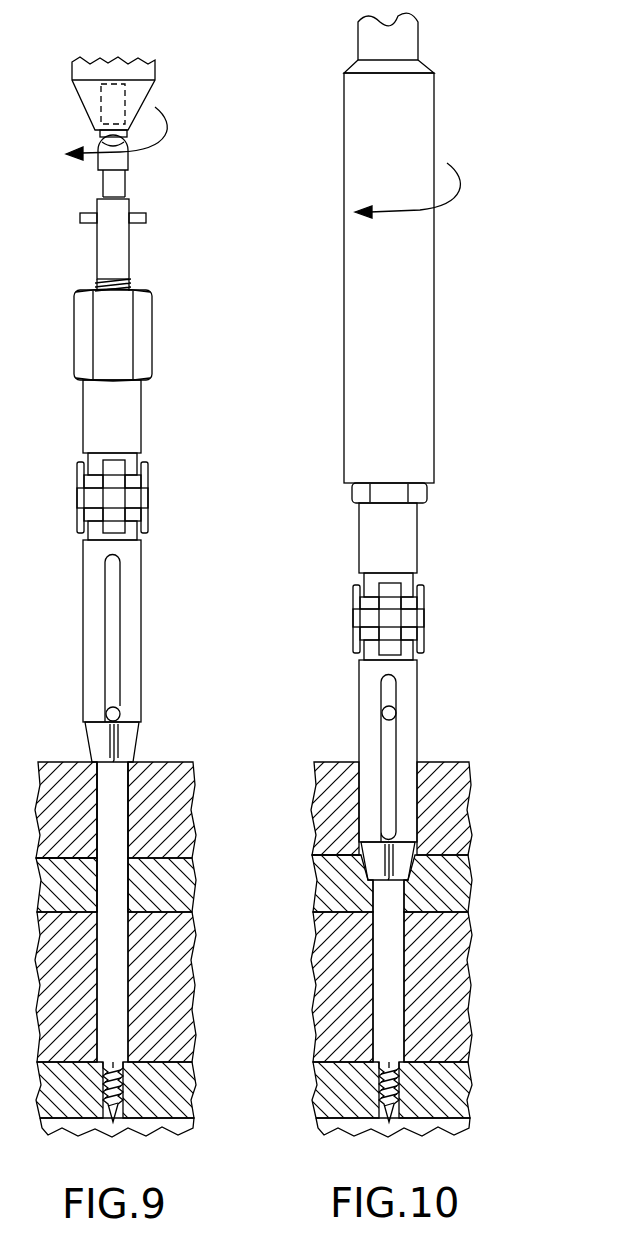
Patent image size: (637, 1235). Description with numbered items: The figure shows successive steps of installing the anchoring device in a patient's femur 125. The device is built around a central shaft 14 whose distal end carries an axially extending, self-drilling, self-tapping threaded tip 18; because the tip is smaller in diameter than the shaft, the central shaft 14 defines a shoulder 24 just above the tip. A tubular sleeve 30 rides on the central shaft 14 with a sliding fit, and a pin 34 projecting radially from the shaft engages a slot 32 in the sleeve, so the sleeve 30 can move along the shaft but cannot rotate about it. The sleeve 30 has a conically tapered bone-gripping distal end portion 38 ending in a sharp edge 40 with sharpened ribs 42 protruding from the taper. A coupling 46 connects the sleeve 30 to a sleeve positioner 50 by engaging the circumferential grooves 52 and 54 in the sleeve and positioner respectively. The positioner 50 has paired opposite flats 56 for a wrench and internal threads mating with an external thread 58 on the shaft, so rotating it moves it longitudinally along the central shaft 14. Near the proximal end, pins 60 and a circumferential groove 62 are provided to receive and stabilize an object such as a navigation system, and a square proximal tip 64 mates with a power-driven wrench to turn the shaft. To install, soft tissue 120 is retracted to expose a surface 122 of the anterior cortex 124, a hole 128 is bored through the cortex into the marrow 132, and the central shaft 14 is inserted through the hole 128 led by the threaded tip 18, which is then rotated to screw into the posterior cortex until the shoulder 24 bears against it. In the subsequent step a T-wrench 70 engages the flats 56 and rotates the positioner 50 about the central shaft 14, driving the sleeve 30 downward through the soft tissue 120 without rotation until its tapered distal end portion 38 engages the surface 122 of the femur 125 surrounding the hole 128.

In FIG. 9, the central shaft 14 is at (129, 244).
In FIG. 10, the central shaft 14 is at (359, 998).
In FIG. 9, the threaded tip 18 is at (98, 1103).
In FIG. 10, the threaded tip 18 is at (382, 1118).
In FIG. 9, the shoulder 24 is at (140, 1072).
In FIG. 10, the shoulder 24 is at (392, 1090).
In FIG. 9, the tubular sleeve 30 is at (142, 582).
In FIG. 10, the tubular sleeve 30 is at (420, 751).
In FIG. 9, the slot 32 is at (118, 622).
In FIG. 10, the slot 32 is at (359, 758).
In FIG. 9, the pin 34 is at (107, 714).
In FIG. 10, the pin 34 is at (359, 712).
In FIG. 9, the bone-gripping distal end portion 38 is at (127, 740).
In FIG. 10, the bone-gripping distal end portion 38 is at (440, 861).
In FIG. 9, the sharp edge 40 is at (118, 764).
In FIG. 10, the sharp edge 40 is at (446, 896).
In FIG. 9, the sharpened ribs 42 is at (90, 740).
In FIG. 10, the sharpened ribs 42 is at (329, 870).
In FIG. 9, the coupling 46 is at (149, 497).
In FIG. 10, the coupling 46 is at (422, 619).
In FIG. 9, the sleeve positioner 50 is at (142, 420).
In FIG. 10, the sleeve positioner 50 is at (420, 538).
In FIG. 9, the circumferential groove 52 is at (96, 537).
In FIG. 10, the circumferential groove 52 is at (356, 658).
In FIG. 9, the circumferential groove 54 is at (96, 458).
In FIG. 10, the circumferential groove 54 is at (356, 579).
In FIG. 9, the flats 56 is at (75, 337).
In FIG. 10, the flats 56 is at (357, 495).
In FIG. 9, the external thread 58 is at (130, 283).
In FIG. 9, the pins 60 is at (80, 218).
In FIG. 9, the circumferential groove 62 is at (129, 181).
In FIG. 9, the proximal tip 64 is at (88, 96).
In FIG. 10, the T-wrench 70 is at (358, 248).
In FIG. 9, the soft tissue 120 is at (193, 796).
In FIG. 10, the soft tissue 120 is at (393, 779).
In FIG. 9, the surface 122 is at (43, 847).
In FIG. 10, the surface 122 is at (305, 854).
In FIG. 9, the anterior cortex 124 is at (230, 884).
In FIG. 10, the anterior cortex 124 is at (358, 890).
In FIG. 9, the femur 125 is at (168, 1126).
In FIG. 10, the femur 125 is at (421, 1142).
In FIG. 9, the hole 128 is at (98, 897).
In FIG. 10, the hole 128 is at (417, 924).
In FIG. 9, the marrow 132 is at (195, 966).
In FIG. 10, the marrow 132 is at (355, 987).